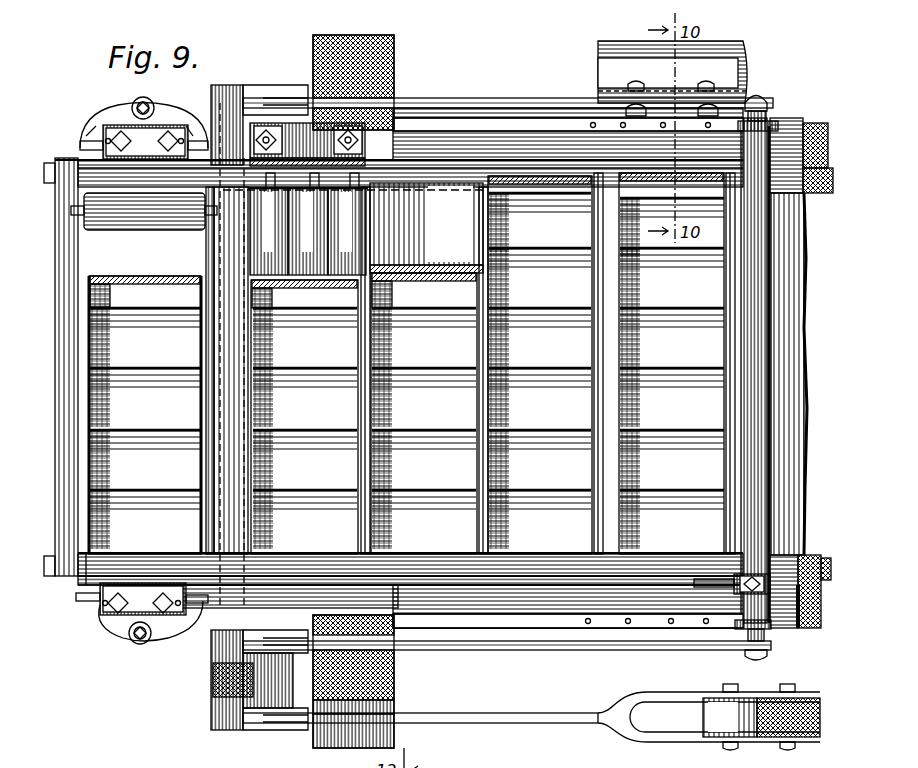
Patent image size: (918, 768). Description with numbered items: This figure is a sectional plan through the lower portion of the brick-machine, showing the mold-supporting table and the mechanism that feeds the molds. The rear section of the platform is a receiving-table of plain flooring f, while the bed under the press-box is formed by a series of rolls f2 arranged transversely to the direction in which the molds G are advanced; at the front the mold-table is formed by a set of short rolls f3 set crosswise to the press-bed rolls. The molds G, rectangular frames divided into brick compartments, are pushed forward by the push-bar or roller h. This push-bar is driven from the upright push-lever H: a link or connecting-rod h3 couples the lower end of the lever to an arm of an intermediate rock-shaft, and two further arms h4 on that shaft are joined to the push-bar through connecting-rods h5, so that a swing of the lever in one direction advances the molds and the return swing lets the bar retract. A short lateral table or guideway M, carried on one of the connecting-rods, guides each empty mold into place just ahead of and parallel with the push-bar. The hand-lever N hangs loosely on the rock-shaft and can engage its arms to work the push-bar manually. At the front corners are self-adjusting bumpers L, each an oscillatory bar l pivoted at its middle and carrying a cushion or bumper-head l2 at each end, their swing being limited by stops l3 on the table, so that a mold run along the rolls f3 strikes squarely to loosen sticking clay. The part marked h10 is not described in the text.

The molds G is at (406, 363).
The push-bar h is at (755, 370).
The connecting-rod h3 is at (462, 692).
The arms h4 is at (288, 116).
The connecting-rods h5 is at (508, 93).
The end piece of loop h10 is at (730, 717).
The push-lever H is at (771, 709).
The lateral table or guideway M is at (684, 78).
The hand-lever N is at (205, 672).
The self-adjusting bumper L is at (138, 363).
The oscillatory bar l is at (144, 382).
The bumper-head l2 is at (72, 137).
The stops l3 is at (88, 118).
The flooring f is at (426, 228).
The rolls f2 is at (308, 224).
The short rolls f3 is at (144, 211).